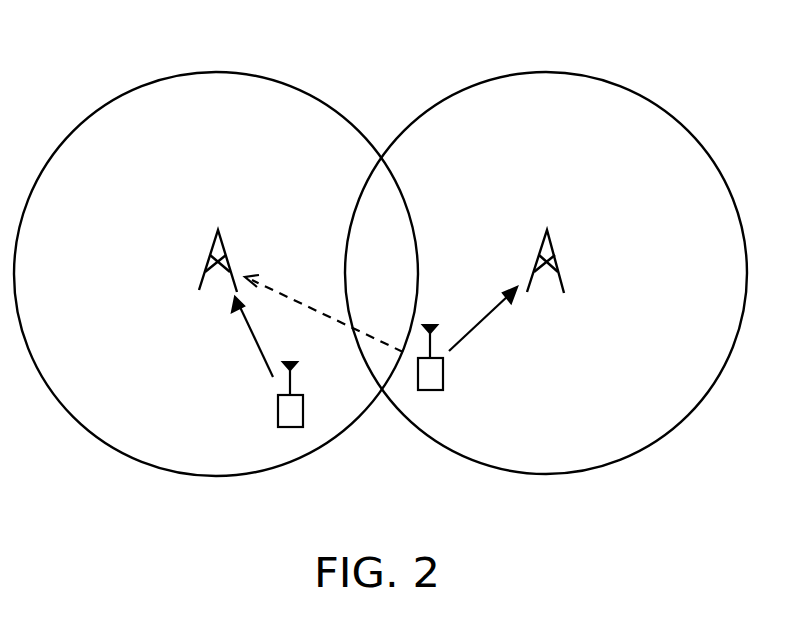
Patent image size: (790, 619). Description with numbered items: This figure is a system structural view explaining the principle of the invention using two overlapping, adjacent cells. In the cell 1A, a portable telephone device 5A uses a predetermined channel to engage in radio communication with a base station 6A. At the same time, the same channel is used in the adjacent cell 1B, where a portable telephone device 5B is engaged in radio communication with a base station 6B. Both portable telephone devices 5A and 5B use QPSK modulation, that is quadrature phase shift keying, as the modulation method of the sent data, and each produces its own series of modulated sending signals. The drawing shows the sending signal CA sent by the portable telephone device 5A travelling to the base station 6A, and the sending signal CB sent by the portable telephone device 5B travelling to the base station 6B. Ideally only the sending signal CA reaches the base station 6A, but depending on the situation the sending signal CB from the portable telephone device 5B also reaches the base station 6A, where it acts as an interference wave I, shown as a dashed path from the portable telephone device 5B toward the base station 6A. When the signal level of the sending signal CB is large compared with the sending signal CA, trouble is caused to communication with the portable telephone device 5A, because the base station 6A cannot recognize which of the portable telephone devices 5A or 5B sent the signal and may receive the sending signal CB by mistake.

The cell 1A is at (215, 70).
The adjacent cell 1B is at (578, 72).
The base station 6A is at (205, 228).
The base station 6B is at (557, 242).
The portable telephone device 5A is at (278, 410).
The portable telephone device 5B is at (437, 390).
The sending signal CA is at (250, 338).
The sending signal CB is at (485, 320).
The interference wave I is at (308, 298).